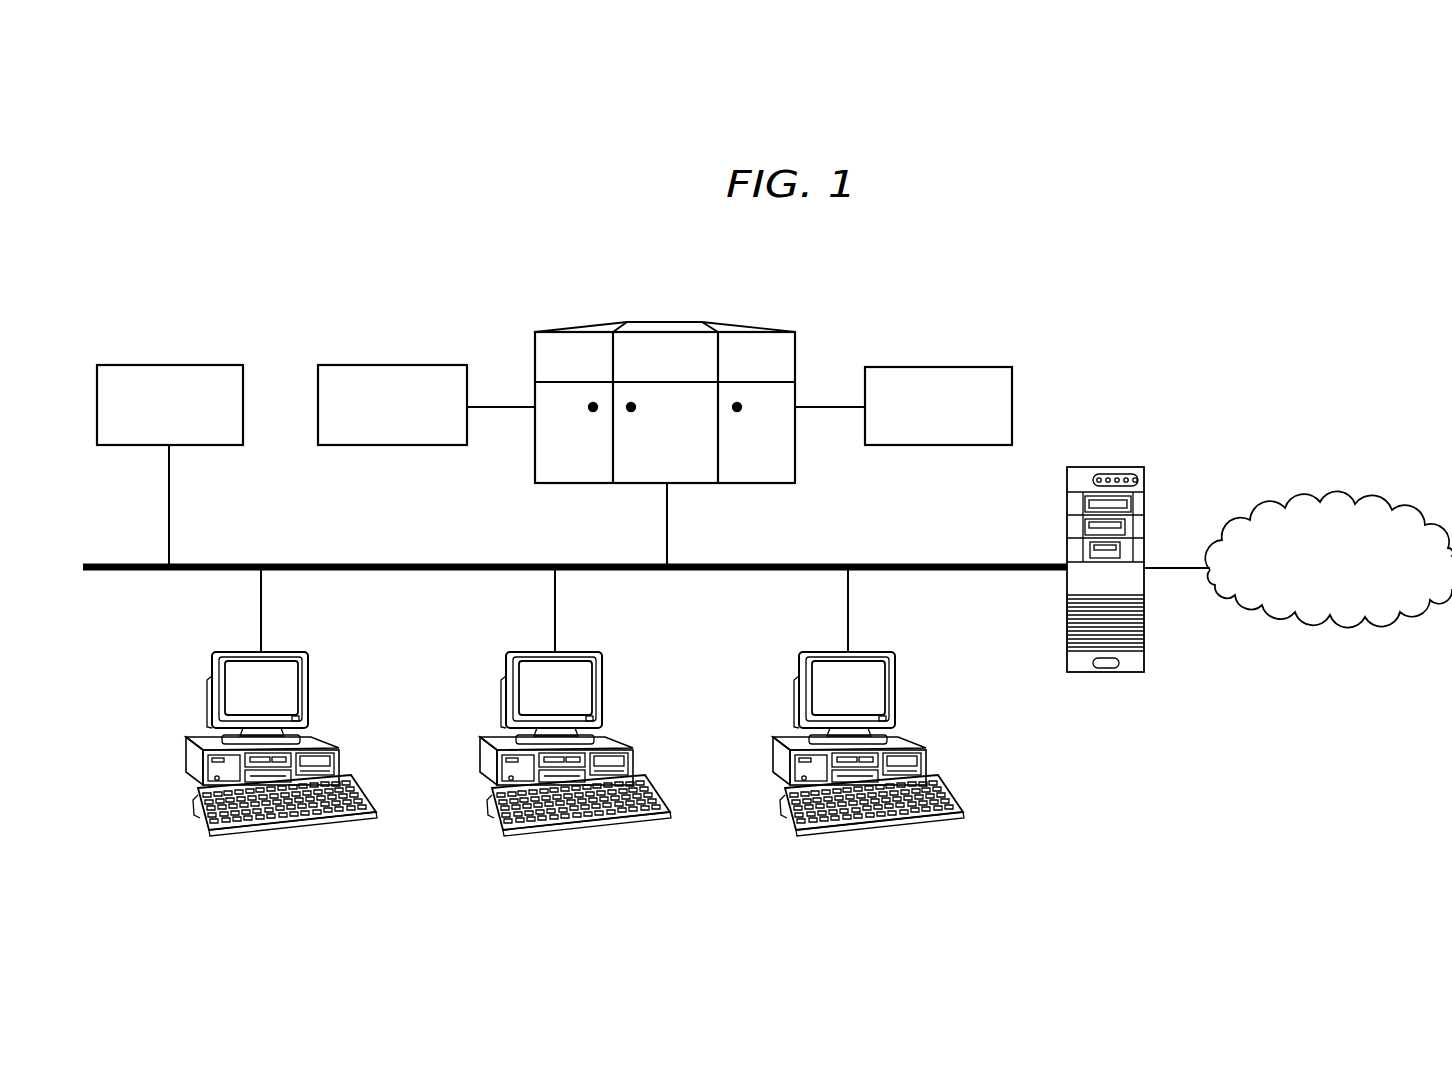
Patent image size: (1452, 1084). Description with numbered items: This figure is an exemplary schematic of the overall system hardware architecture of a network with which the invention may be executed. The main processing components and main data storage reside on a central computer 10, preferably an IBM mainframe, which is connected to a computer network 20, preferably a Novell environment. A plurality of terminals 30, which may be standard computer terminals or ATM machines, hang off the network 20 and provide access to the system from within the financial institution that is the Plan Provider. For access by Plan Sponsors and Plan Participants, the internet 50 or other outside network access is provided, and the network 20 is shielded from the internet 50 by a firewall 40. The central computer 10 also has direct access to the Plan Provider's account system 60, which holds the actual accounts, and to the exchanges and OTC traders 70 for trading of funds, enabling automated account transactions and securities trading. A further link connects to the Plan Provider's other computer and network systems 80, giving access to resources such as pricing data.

The central computer 10 is at (664, 322).
The computer network 20 is at (940, 564).
The terminals 30 is at (222, 650).
The firewall 40 is at (1108, 467).
The internet 50 is at (1347, 573).
The account system 60 is at (939, 367).
The exchanges and OTC traders 70 is at (393, 365).
The Plan Provider's other computer and network systems 80 is at (170, 365).